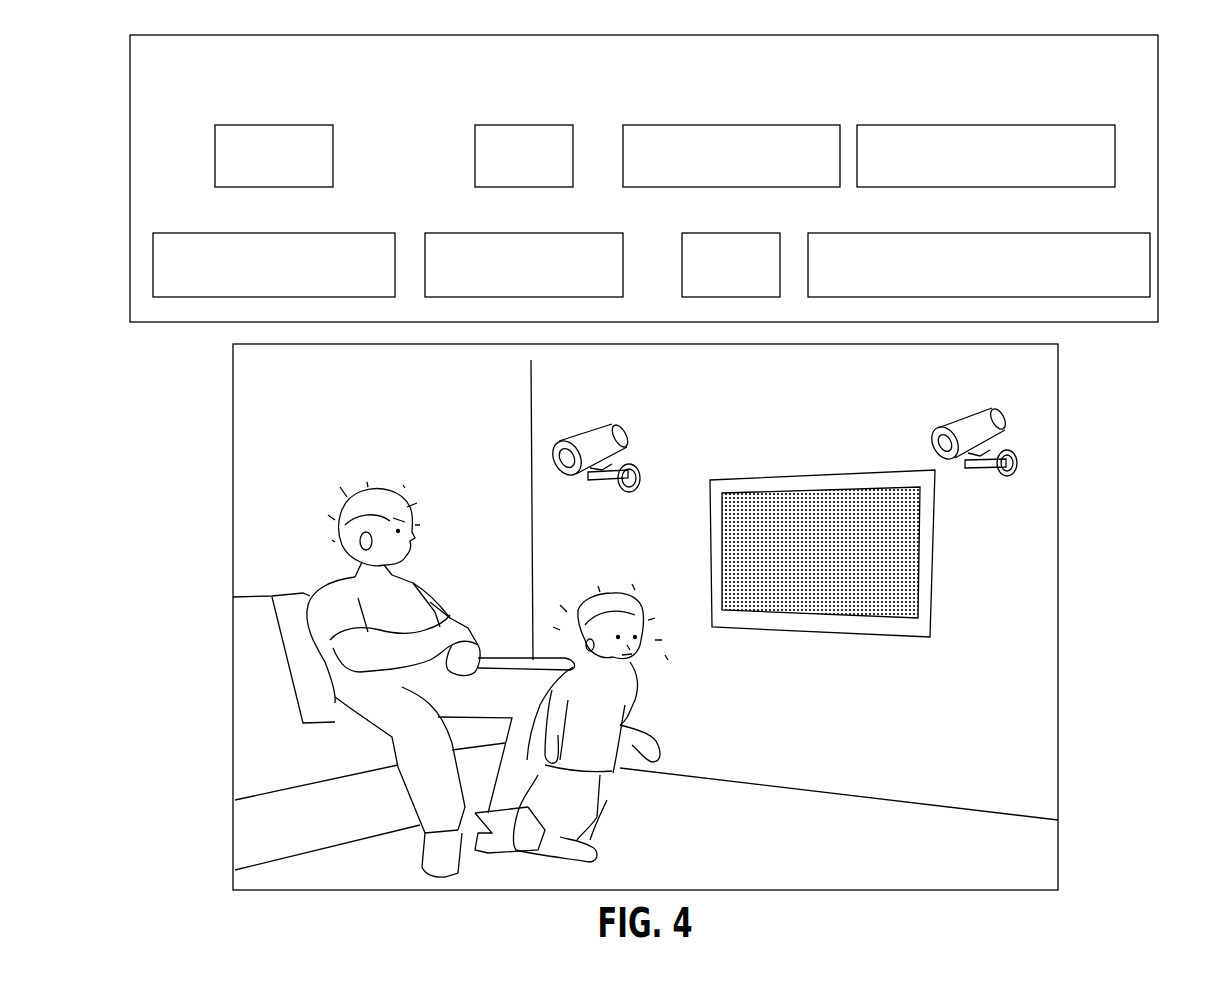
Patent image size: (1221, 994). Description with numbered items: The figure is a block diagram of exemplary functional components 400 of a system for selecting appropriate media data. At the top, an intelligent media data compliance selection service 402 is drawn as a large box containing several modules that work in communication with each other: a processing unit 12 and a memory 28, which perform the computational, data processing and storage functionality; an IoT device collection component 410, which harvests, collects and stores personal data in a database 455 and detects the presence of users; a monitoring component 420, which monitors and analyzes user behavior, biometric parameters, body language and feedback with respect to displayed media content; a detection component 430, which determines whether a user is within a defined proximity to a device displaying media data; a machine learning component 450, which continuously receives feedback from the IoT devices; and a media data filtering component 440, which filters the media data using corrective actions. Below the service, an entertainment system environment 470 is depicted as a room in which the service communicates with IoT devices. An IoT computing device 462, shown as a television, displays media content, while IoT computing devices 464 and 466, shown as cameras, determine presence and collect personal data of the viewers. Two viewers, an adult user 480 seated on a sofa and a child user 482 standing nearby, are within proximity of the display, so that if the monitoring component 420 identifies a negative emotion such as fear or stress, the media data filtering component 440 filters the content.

The functional components 400 is at (70, 60).
The intelligent media data compliance selection service 402 is at (1159, 190).
The processing unit 12 is at (273, 122).
The memory 28 is at (518, 122).
The IoT device collection component 410 is at (721, 122).
The monitoring component 420 is at (999, 122).
The detection component 430 is at (269, 230).
The machine learning component 450 is at (521, 230).
The database 455 is at (721, 230).
The media data filtering component 440 is at (999, 230).
The entertainment system environment 470 is at (1059, 390).
The IoT computing device 462 is at (813, 472).
The IoT computing device 464 is at (591, 431).
The IoT computing device 466 is at (961, 419).
The user 480 is at (384, 492).
The user 482 is at (612, 594).